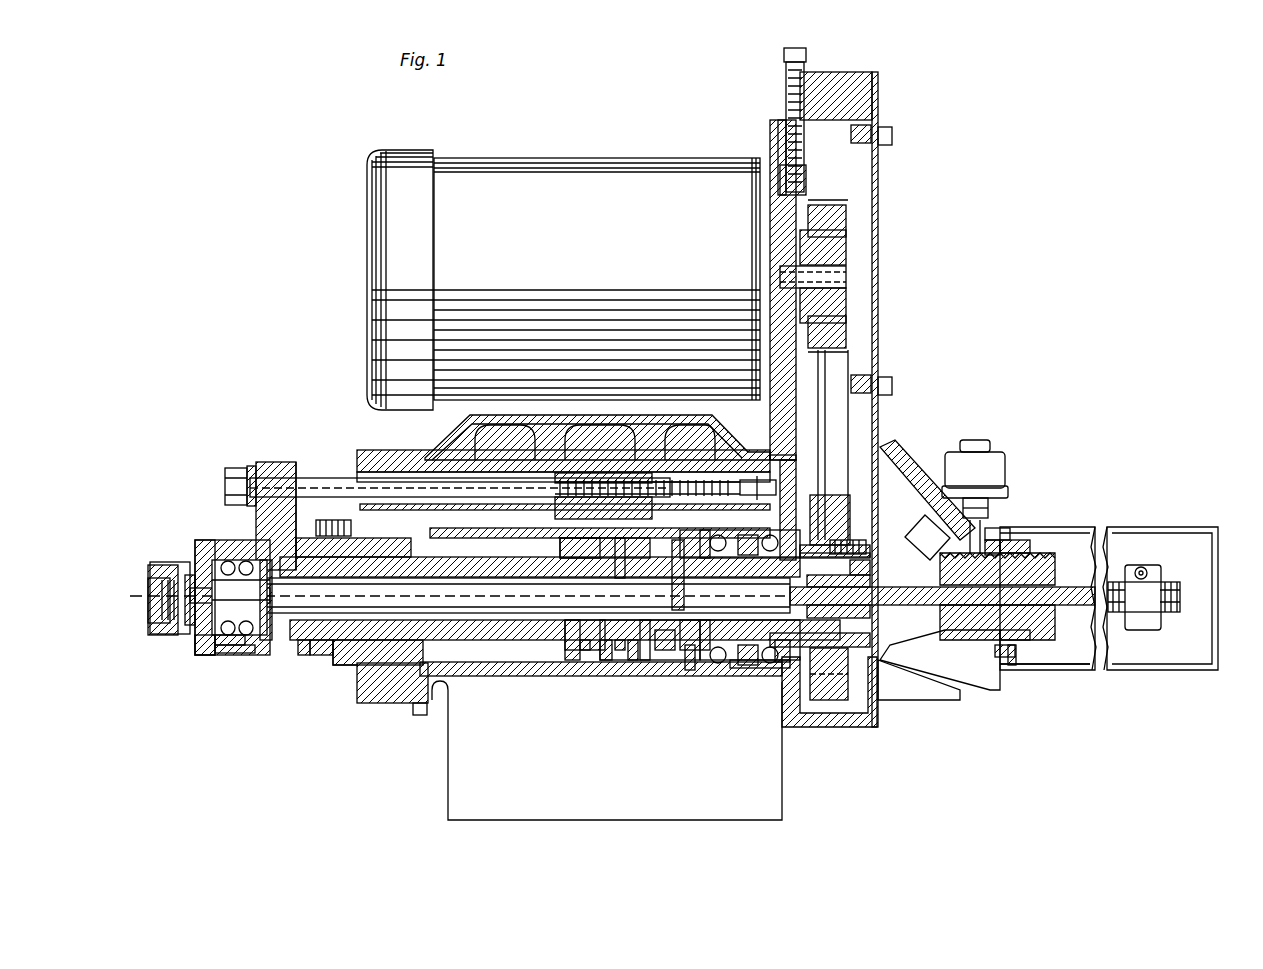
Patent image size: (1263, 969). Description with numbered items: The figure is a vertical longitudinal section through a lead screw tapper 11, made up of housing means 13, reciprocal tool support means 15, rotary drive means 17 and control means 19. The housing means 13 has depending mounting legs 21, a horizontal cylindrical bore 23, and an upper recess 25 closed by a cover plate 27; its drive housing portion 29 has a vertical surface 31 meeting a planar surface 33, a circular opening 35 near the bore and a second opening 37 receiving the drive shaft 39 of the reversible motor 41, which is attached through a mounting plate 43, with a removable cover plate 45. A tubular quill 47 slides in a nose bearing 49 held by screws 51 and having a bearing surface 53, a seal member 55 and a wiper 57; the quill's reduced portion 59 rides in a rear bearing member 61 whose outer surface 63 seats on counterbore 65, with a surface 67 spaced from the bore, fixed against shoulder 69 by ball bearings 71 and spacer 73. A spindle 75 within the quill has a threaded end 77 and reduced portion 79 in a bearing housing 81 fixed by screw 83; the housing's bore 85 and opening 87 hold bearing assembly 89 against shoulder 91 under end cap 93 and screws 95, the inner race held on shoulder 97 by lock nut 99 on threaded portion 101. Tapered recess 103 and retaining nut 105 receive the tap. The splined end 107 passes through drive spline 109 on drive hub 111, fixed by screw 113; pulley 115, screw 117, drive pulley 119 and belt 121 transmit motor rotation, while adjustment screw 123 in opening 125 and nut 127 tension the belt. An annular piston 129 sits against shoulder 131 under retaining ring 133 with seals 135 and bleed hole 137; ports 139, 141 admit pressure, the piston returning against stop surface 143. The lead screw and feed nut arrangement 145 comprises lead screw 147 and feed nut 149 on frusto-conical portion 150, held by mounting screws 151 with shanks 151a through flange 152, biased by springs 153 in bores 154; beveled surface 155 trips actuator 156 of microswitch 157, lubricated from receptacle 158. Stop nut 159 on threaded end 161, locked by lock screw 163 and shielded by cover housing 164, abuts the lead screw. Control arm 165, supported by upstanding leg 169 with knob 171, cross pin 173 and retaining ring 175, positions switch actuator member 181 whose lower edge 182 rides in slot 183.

The lead screw tapper 11 is at (218, 148).
The housing means 13 is at (438, 765).
The reciprocal tool support means 15 is at (178, 538).
The rotary drive means 17 is at (597, 150).
The control means 19 is at (415, 470).
The mounting legs 21 is at (775, 802).
The cylindrical bore 23 is at (415, 680).
The chamber or recess 25 is at (400, 528).
The cover plate 27 is at (458, 434).
The drive housing portion 29 is at (808, 727).
The vertical surface 31 is at (790, 470).
The planar surface 33 is at (790, 497).
The circular opening 35 is at (782, 670).
The second circular opening 37 is at (790, 395).
The drive shaft 39 is at (850, 280).
The reversible electric drive motor 41 is at (494, 163).
The mounting plate 43 is at (772, 135).
The cover plate 45 is at (880, 422).
The tubular quill 47 is at (490, 632).
The nose bearing 49 is at (340, 665).
The screws 51 is at (318, 532).
The cylindrical bearing surface 53 is at (335, 655).
The seal member 55 is at (315, 650).
The annular wiper 57 is at (310, 645).
The reduced diameter peripheral surface portion 59 is at (645, 672).
The rear bearing member 61 is at (675, 672).
The outer peripheral surface portion 63 is at (705, 660).
The counterbore surface 65 is at (750, 672).
The cylindrical surface portion 67 is at (660, 660).
The radial shoulder surface 69 is at (690, 672).
The antifrictional ball bearings 71 is at (722, 665).
The annular spacer 73 is at (742, 665).
The spindle 75 is at (465, 590).
The threaded forward end portion 77 is at (172, 635).
The reduced diameter portion 79 is at (215, 650).
The bearing housing 81 is at (260, 650).
The screw 83 is at (270, 540).
The cylindrical bore 85 is at (250, 630).
The axial circular opening 87 is at (272, 648).
The radial and thrust ball bearing assembly 89 is at (235, 555).
The shoulder surface 91 is at (232, 640).
The end cap 93 is at (210, 548).
The screws 95 is at (205, 645).
The radial shoulder 97 is at (200, 560).
The threaded lock nut 99 is at (375, 590).
The threaded portion 101 is at (350, 600).
The tapered internal recess 103 is at (150, 612).
The retaining nut 105 is at (150, 580).
The splined end 107 is at (1083, 607).
The spindle drive spline 109 is at (870, 638).
The annular drive hub 111 is at (860, 665).
The screw means 113 is at (855, 553).
The pulley 115 is at (845, 520).
The screw 117 is at (845, 540).
The drive pulley 119 is at (840, 230).
The endless belt 121 is at (840, 428).
The threaded adjustment screw 123 is at (803, 63).
The opening 125 is at (786, 95).
The adjustment nut 127 is at (808, 188).
The annular piston 129 is at (575, 660).
The radial shoulder 131 is at (568, 548).
The retaining ring 133 is at (620, 555).
The annular seal members 135 is at (620, 665).
The radial bleed hole 137 is at (608, 655).
The fluid pressure port 139 is at (390, 545).
The fluid pressure port 141 is at (675, 555).
The stop surface 143 is at (636, 660).
The lead screw and feed nut arrangement 145 is at (1050, 542).
The lead screw 147 is at (1042, 620).
The feed nut 149 is at (1035, 530).
The frusto-conical portion 150 is at (928, 700).
The mounting screw 151 is at (1005, 655).
The shank portion 151a is at (1012, 675).
The radial flange 152 is at (1000, 540).
The coil compression springs 153 is at (990, 530).
The bores 154 is at (985, 520).
The annular beveled surface 155 is at (960, 640).
The actuator member 156 is at (950, 558).
The motor control microswitch 157 is at (920, 540).
The lubricating oil receptacle 158 is at (1005, 465).
The annular stop nut 159 is at (1140, 635).
The external threaded end portion 161 is at (1175, 612).
The lock screw 163 is at (1145, 568).
The cover housing 164 is at (1068, 670).
The control arm 165 is at (325, 487).
The upstanding leg 169 is at (273, 462).
The knurled knob 171 is at (237, 478).
The cross pin 173 is at (258, 478).
The retaining ring 175 is at (295, 478).
The switch actuator member 181 is at (640, 478).
The lower edge portion 182 is at (560, 520).
The groove or slot 183 is at (445, 528).